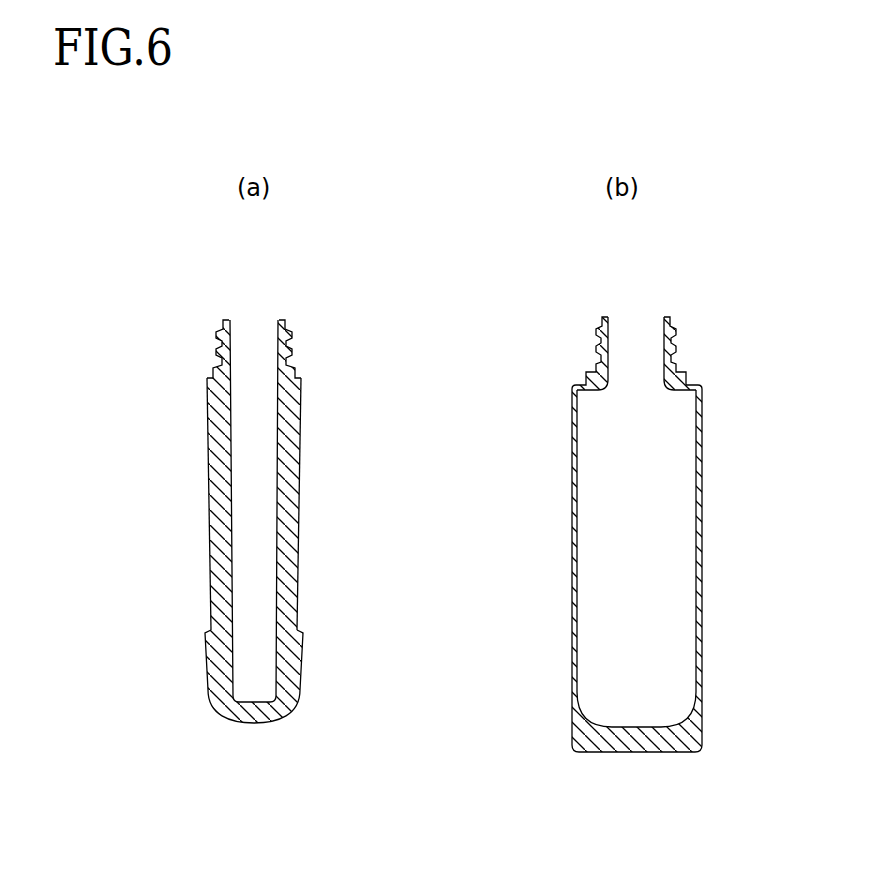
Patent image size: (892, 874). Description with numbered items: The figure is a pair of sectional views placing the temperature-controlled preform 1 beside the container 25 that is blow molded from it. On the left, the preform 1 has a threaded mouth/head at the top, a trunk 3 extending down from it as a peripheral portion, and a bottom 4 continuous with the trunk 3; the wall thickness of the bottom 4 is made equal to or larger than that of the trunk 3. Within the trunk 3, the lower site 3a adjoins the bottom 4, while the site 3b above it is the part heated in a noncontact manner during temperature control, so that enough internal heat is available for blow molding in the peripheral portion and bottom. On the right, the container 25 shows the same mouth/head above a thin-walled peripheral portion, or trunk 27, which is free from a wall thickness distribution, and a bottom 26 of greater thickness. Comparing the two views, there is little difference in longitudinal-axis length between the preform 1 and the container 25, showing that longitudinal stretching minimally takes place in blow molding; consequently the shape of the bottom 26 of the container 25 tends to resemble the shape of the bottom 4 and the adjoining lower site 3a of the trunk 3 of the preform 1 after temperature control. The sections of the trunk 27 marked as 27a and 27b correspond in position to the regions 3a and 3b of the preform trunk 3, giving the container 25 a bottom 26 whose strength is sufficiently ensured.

The preform 1 is at (247, 531).
The trunk 3 is at (300, 440).
The lower site of the trunk 3a is at (302, 648).
The site of the trunk 3b is at (292, 563).
The bottom 4 is at (260, 718).
The container 25 is at (633, 552).
The bottom 26 is at (632, 748).
The peripheral portion (trunk) 27 is at (702, 453).
The lower body portion of container 27a is at (703, 723).
The upper body portion of container 27b is at (700, 568).